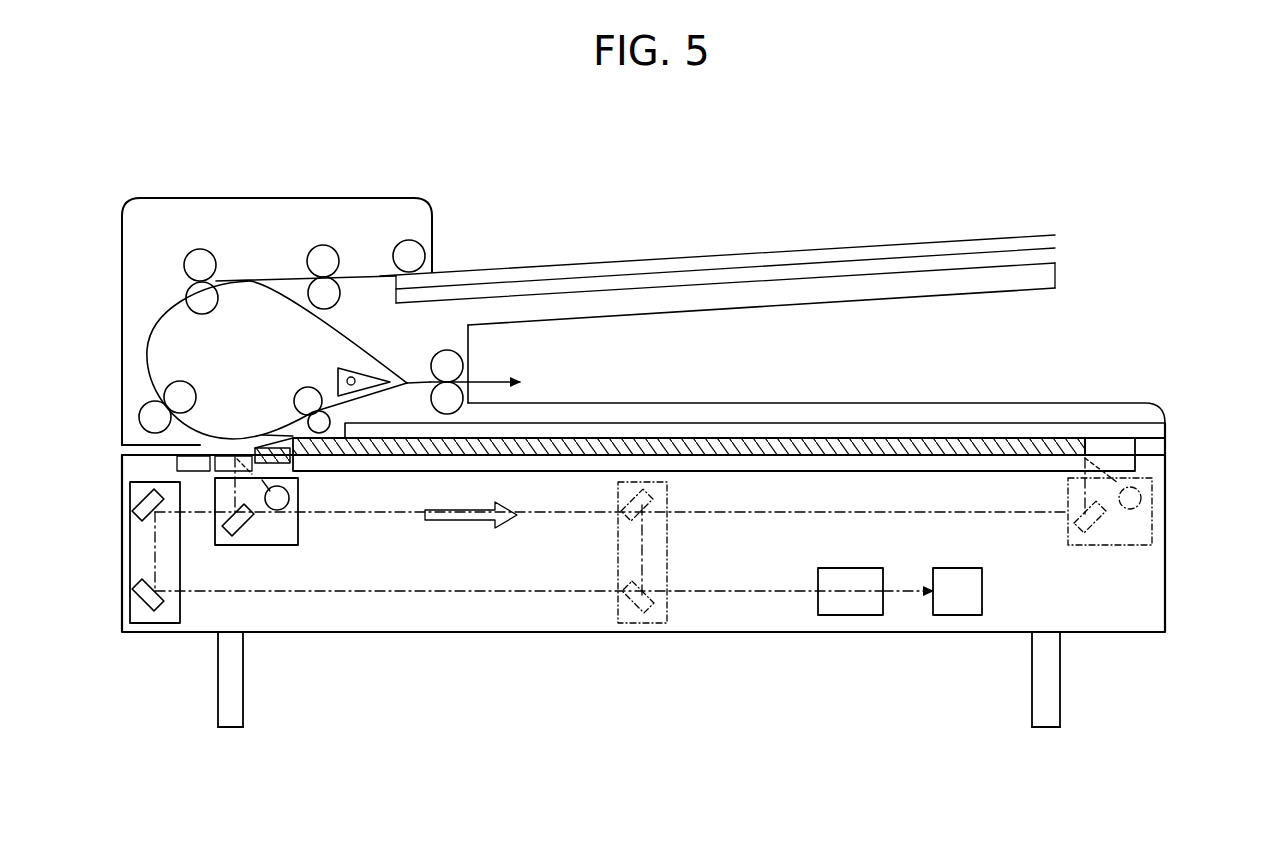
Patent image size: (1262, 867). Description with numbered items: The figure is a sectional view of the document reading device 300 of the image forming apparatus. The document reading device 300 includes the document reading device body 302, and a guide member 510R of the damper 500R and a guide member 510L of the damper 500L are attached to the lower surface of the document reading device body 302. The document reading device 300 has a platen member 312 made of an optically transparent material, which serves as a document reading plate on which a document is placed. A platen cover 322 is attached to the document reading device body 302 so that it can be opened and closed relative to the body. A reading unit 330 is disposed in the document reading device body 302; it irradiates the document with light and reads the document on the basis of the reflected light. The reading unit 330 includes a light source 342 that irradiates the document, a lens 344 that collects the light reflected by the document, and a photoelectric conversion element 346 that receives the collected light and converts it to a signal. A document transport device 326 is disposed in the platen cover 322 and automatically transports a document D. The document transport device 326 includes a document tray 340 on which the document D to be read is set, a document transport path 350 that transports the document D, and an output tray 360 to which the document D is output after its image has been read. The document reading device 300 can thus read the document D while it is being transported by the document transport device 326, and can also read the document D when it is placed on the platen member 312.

The document reading device 300 is at (799, 156).
The document reading device body 302 is at (1167, 510).
The platen member 312 is at (789, 473).
The platen cover 322 is at (741, 310).
The document transport device 326 is at (212, 248).
The reading unit 330 is at (120, 567).
The document tray 340 is at (1057, 264).
The light source 342 is at (285, 497).
The lens 344 is at (843, 568).
The photoelectric conversion element 346 is at (958, 568).
The document transport path 350 is at (165, 299).
The output tray 360 is at (877, 402).
The damper 500L is at (246, 715).
The damper 500R is at (1063, 715).
The guide member 510L is at (236, 690).
The guide member 510R is at (1052, 690).
The document D is at (578, 447).